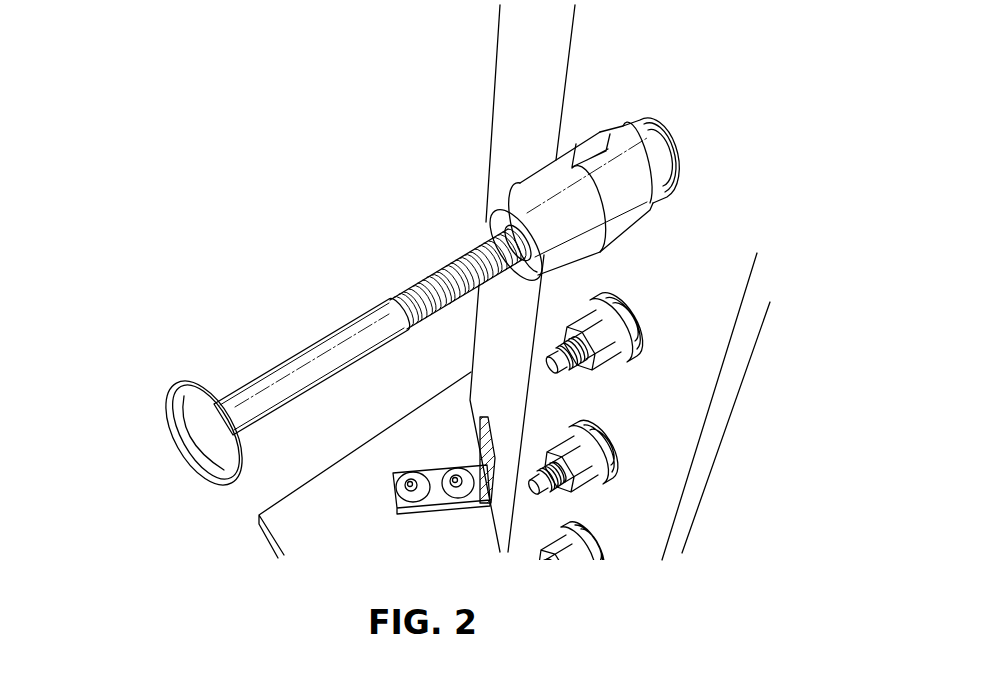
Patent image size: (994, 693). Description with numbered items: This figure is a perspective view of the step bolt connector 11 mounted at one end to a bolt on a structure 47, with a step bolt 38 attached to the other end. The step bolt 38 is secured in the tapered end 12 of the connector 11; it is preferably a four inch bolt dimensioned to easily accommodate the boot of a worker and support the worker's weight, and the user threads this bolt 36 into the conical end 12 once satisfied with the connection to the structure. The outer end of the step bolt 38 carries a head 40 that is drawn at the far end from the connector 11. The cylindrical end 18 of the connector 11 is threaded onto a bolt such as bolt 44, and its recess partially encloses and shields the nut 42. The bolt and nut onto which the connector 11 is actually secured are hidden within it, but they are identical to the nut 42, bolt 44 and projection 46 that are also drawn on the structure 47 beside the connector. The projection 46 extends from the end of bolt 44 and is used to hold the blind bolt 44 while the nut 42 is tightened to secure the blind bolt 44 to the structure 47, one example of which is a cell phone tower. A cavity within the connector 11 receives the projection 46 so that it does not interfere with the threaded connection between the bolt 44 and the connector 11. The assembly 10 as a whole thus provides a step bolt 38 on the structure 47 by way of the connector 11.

The coupling body 10 is at (569, 169).
The connector 11 is at (601, 164).
The tapered end 12 is at (520, 193).
The cylindrical end 18 is at (613, 129).
The bolt 36 is at (483, 233).
The step bolt 38 is at (370, 312).
The bolt head 40 is at (170, 385).
The nut 42 is at (582, 360).
The bolt 44 is at (586, 371).
The projection 46 is at (545, 368).
The structure 47 is at (505, 326).